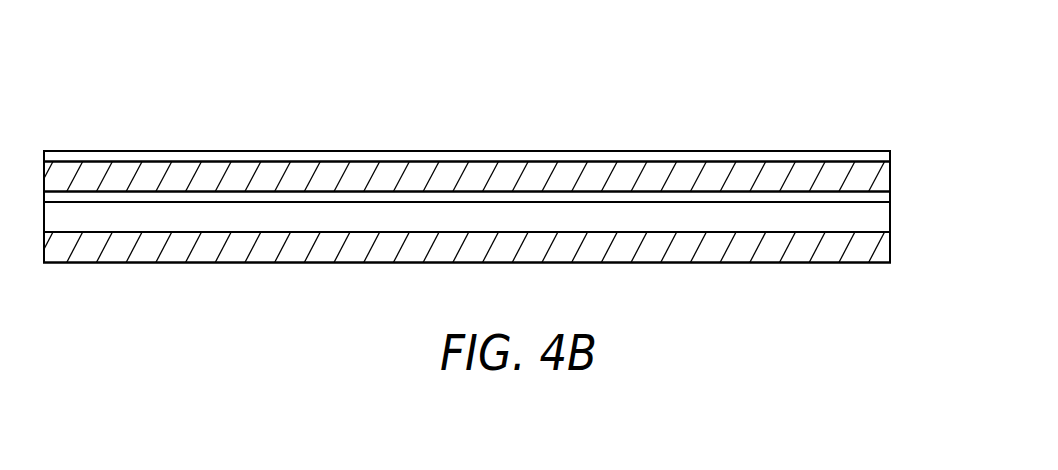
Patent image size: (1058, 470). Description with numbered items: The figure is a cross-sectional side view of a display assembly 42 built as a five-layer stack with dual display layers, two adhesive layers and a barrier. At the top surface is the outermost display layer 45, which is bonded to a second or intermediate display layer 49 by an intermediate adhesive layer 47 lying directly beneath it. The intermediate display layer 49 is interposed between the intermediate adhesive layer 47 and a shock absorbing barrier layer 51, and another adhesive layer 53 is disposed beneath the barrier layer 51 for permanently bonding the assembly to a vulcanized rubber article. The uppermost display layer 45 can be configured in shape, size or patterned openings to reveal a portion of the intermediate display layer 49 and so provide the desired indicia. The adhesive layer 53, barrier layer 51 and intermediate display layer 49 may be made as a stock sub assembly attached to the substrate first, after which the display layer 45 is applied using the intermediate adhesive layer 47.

The display assembly 42 is at (796, 119).
The display layer 45 is at (575, 155).
The intermediate adhesive layer 47 is at (668, 177).
The intermediate display layer 49 is at (604, 198).
The barrier layer 51 is at (702, 218).
The adhesive layer 53 is at (747, 247).